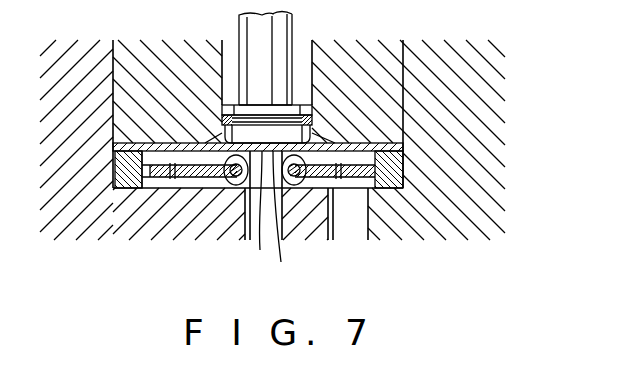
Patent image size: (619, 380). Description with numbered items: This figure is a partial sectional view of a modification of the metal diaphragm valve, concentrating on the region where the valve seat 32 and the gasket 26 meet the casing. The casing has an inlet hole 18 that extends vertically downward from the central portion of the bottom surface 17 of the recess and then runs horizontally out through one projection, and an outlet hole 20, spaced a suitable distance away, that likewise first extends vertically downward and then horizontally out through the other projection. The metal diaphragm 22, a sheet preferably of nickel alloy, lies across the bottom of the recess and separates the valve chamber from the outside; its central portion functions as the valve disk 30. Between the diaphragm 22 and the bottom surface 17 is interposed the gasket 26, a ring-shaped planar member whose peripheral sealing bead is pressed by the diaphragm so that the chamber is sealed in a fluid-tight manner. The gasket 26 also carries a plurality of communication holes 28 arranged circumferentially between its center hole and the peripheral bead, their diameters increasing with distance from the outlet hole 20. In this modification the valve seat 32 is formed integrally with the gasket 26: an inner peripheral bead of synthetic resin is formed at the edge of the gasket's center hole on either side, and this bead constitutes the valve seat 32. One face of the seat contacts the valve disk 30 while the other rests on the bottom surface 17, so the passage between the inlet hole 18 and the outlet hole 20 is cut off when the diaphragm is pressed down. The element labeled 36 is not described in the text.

The shaft 36 is at (282, 56).
The metal diaphragm 22 is at (400, 145).
The gasket 26 is at (118, 190).
The bottom surface 17 is at (158, 192).
The valve seat 32 is at (220, 192).
The inlet hole 18 is at (252, 236).
The valve disk 30 is at (276, 219).
The outlet hole 20 is at (352, 225).
The communication holes 28 is at (355, 190).